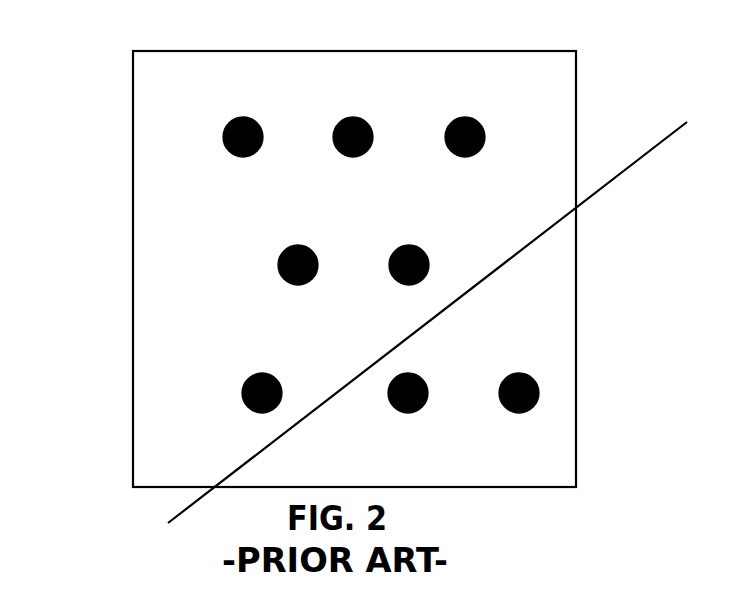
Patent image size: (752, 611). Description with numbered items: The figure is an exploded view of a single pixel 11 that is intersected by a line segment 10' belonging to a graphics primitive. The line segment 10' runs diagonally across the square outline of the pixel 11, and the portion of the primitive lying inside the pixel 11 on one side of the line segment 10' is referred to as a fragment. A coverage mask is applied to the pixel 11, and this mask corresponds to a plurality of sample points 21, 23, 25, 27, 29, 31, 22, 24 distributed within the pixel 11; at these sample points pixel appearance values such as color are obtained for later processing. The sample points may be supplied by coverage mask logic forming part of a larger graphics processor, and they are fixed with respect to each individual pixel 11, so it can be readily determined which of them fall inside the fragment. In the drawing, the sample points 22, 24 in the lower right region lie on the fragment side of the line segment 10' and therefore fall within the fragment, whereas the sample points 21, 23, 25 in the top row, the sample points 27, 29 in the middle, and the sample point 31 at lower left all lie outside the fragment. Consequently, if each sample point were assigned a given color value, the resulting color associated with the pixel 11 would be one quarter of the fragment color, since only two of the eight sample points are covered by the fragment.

The pixel 11 is at (92, 119).
The line segment 10' is at (427, 320).
The sample point 21 is at (239, 118).
The sample point 23 is at (349, 118).
The sample point 25 is at (461, 118).
The sample point 27 is at (294, 246).
The sample point 29 is at (405, 246).
The sample point 31 is at (258, 374).
The sample point 22 is at (404, 374).
The sample point 24 is at (515, 374).